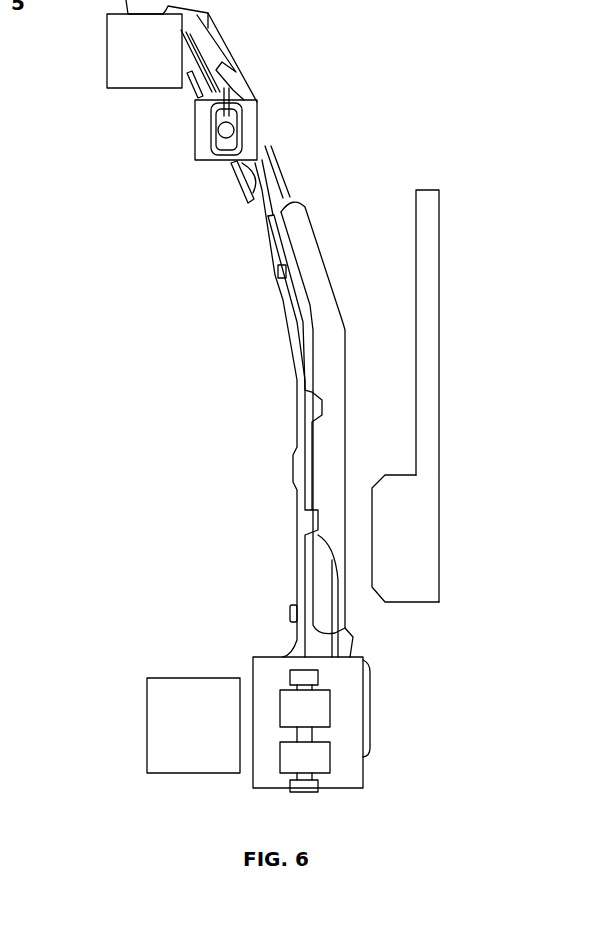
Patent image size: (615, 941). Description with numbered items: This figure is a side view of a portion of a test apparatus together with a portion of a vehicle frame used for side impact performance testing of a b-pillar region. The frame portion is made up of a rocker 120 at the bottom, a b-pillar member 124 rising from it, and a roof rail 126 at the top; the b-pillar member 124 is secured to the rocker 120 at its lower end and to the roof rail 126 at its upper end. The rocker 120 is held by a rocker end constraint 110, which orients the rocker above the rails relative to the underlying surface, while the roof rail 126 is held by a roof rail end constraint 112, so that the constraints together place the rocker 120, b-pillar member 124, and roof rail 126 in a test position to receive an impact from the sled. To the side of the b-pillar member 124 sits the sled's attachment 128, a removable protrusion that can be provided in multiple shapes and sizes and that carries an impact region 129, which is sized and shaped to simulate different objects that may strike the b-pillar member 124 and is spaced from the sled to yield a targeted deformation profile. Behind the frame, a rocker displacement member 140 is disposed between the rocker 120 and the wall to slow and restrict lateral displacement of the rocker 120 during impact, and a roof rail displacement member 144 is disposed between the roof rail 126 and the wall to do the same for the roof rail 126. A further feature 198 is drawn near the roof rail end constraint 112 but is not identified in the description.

The rocker end constraints 110 is at (334, 798).
The roof rail end constraints 112 is at (186, 170).
The rocker 120 is at (372, 672).
The b-pillar member 124 is at (320, 366).
The roof rail 126 is at (199, 26).
The attachment 128 is at (440, 345).
The impact region 129 is at (401, 480).
The rocker displacement members 140 is at (193, 678).
The roof rail displacement members 144 is at (100, 78).
The cable mount 198 is at (213, 107).